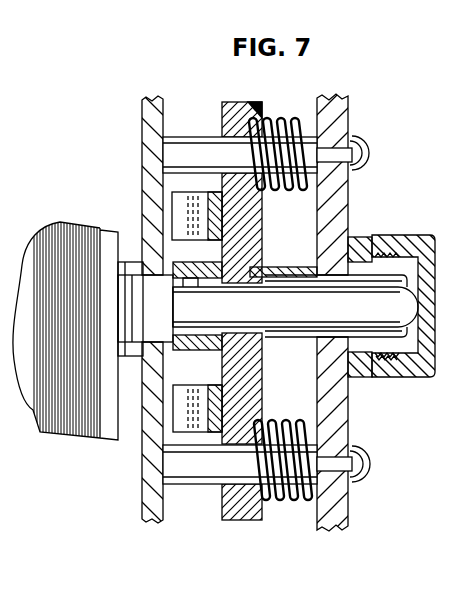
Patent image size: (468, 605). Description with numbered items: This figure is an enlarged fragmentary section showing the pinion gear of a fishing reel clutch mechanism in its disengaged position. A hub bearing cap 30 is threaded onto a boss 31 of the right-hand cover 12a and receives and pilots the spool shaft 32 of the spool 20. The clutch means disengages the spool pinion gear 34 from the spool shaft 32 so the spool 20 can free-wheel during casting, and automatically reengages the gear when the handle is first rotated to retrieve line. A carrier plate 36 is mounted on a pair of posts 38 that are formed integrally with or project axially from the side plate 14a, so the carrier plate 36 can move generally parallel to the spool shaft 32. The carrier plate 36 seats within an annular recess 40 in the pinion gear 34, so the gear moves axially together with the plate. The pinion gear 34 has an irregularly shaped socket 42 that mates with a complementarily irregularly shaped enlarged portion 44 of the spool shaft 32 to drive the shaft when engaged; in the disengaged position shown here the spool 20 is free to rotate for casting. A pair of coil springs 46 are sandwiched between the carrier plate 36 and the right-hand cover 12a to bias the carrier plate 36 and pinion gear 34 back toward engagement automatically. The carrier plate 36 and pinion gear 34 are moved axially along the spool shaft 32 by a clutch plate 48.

The cover 12a is at (342, 120).
The side plate 14a is at (147, 130).
The spool 20 is at (55, 236).
The hub bearing cap 30 is at (402, 247).
The boss 31 is at (398, 352).
The spool shaft 32 is at (297, 302).
The spool pinion gear 34 is at (292, 268).
The carrier plate 36 is at (245, 106).
The posts 38 is at (180, 137).
The annular recess 40 is at (262, 368).
The socket 42 is at (192, 292).
The enlarged portion 44 is at (135, 275).
The coil springs 46 is at (285, 125).
The clutch plate 48 is at (196, 190).